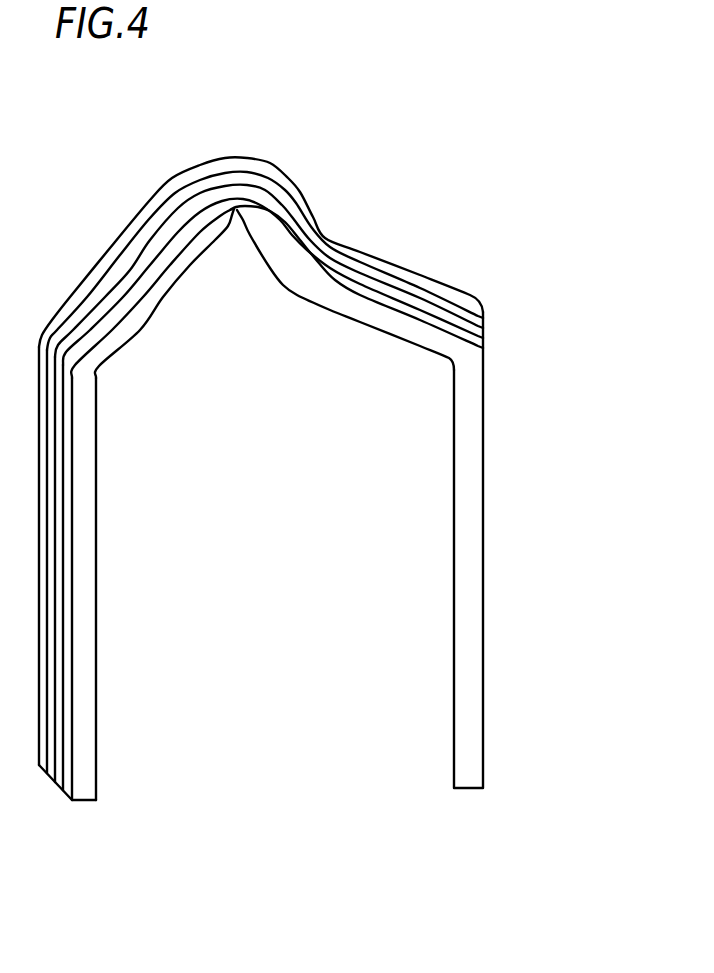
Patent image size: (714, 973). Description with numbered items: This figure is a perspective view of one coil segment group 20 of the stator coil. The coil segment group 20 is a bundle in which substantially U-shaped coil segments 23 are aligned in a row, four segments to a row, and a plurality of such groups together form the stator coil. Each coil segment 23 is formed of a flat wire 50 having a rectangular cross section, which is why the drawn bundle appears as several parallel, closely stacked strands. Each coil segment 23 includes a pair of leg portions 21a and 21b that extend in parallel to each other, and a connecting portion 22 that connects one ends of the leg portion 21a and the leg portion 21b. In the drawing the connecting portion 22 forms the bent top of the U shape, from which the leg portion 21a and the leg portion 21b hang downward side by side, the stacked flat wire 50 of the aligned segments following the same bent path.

The coil segment group 20 is at (428, 211).
The leg portion 21a is at (473, 455).
The leg portion 21b is at (78, 480).
The connecting portion 22 is at (232, 180).
The coil segment 23 is at (165, 238).
The flat wire 50 is at (83, 713).